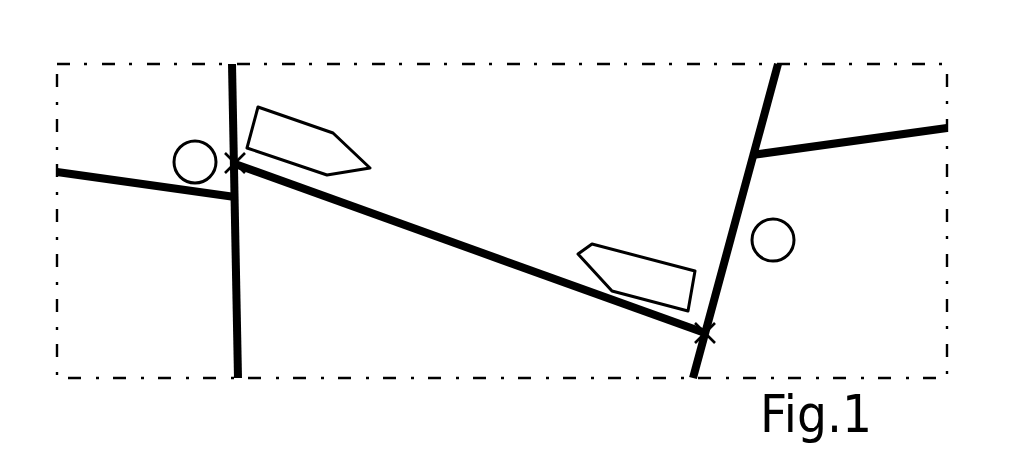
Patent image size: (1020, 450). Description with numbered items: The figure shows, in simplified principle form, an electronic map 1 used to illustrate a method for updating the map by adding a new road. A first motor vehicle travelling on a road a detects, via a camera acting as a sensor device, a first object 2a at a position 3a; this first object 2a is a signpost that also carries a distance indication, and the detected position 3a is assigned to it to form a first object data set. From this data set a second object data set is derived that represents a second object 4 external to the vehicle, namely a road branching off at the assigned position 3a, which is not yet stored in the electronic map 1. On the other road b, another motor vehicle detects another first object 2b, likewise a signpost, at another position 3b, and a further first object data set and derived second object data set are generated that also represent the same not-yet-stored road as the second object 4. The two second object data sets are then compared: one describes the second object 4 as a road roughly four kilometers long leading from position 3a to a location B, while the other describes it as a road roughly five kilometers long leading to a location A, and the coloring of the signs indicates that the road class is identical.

The electronic map 1 is at (538, 104).
The first object 2a is at (652, 253).
The another first object 2b is at (318, 126).
The position 3a is at (712, 330).
The another position 3b is at (230, 160).
The second object 4 is at (420, 238).
The road a is at (750, 177).
The other road b is at (231, 278).
The location A is at (793, 250).
The location B is at (181, 148).